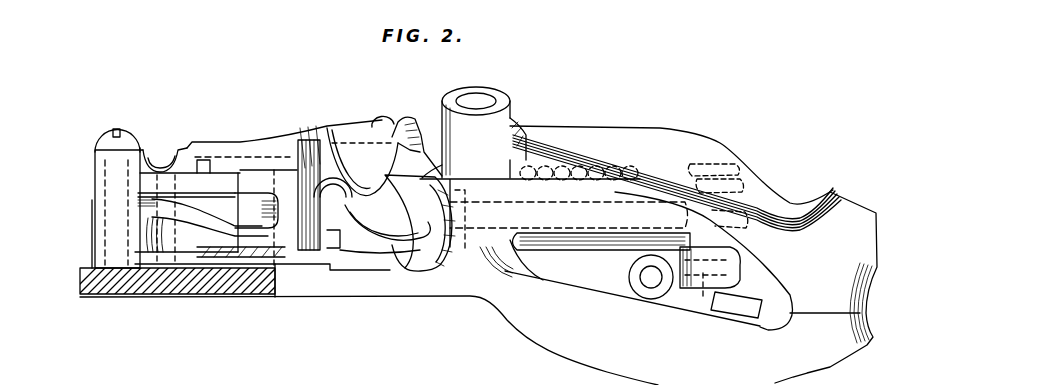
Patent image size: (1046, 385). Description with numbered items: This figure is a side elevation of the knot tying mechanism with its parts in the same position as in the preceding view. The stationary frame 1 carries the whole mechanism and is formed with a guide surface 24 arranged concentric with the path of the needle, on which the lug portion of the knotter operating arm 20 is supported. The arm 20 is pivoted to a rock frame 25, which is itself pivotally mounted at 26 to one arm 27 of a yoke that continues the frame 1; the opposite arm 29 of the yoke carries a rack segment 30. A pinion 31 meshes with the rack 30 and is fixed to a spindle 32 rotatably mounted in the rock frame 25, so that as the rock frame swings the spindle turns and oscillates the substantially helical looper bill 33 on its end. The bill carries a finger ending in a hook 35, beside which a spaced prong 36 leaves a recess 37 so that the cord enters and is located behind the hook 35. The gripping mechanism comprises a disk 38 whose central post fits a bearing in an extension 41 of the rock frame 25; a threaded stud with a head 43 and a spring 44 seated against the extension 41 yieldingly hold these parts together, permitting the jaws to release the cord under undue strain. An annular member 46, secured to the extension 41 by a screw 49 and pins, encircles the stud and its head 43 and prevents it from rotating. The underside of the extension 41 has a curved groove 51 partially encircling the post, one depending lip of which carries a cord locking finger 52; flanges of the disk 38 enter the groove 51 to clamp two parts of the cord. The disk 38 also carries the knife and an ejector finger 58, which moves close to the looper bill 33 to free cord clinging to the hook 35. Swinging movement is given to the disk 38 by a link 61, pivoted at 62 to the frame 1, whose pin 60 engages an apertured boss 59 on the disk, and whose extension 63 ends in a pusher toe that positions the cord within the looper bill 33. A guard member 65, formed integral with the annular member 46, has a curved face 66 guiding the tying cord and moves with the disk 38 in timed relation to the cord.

The frame 1 is at (420, 328).
The knotter operating arm 20 is at (704, 261).
The guide surface 24 is at (846, 188).
The rock frame 25 is at (569, 203).
The pivot 26 is at (476, 101).
The arm of yoke 27 is at (675, 178).
The opposite arm of yoke 29 is at (500, 108).
The rack segment 30 is at (528, 168).
The pinion 31 is at (741, 270).
The spindle 32 is at (548, 240).
The looper bill 33 is at (402, 268).
The hook 35 is at (388, 118).
The extension or prong 36 is at (419, 116).
The recess 37 is at (440, 166).
The disk (plate) 38 is at (200, 264).
The extension of the rock frame 41 is at (333, 238).
The head of stud 43 is at (210, 141).
The spring 44 is at (240, 264).
The annular member 46 is at (283, 175).
The screw 49 is at (160, 166).
The groove 51 is at (333, 183).
The cord locking finger 52 is at (332, 250).
The ejector finger 58 is at (442, 175).
The apertured boss 59 is at (270, 217).
The pin 60 is at (285, 264).
The link 61 is at (206, 217).
The pivot 62 is at (128, 134).
The extension of link 63 is at (240, 168).
The guard member 65 is at (325, 128).
The curved face 66 is at (349, 195).